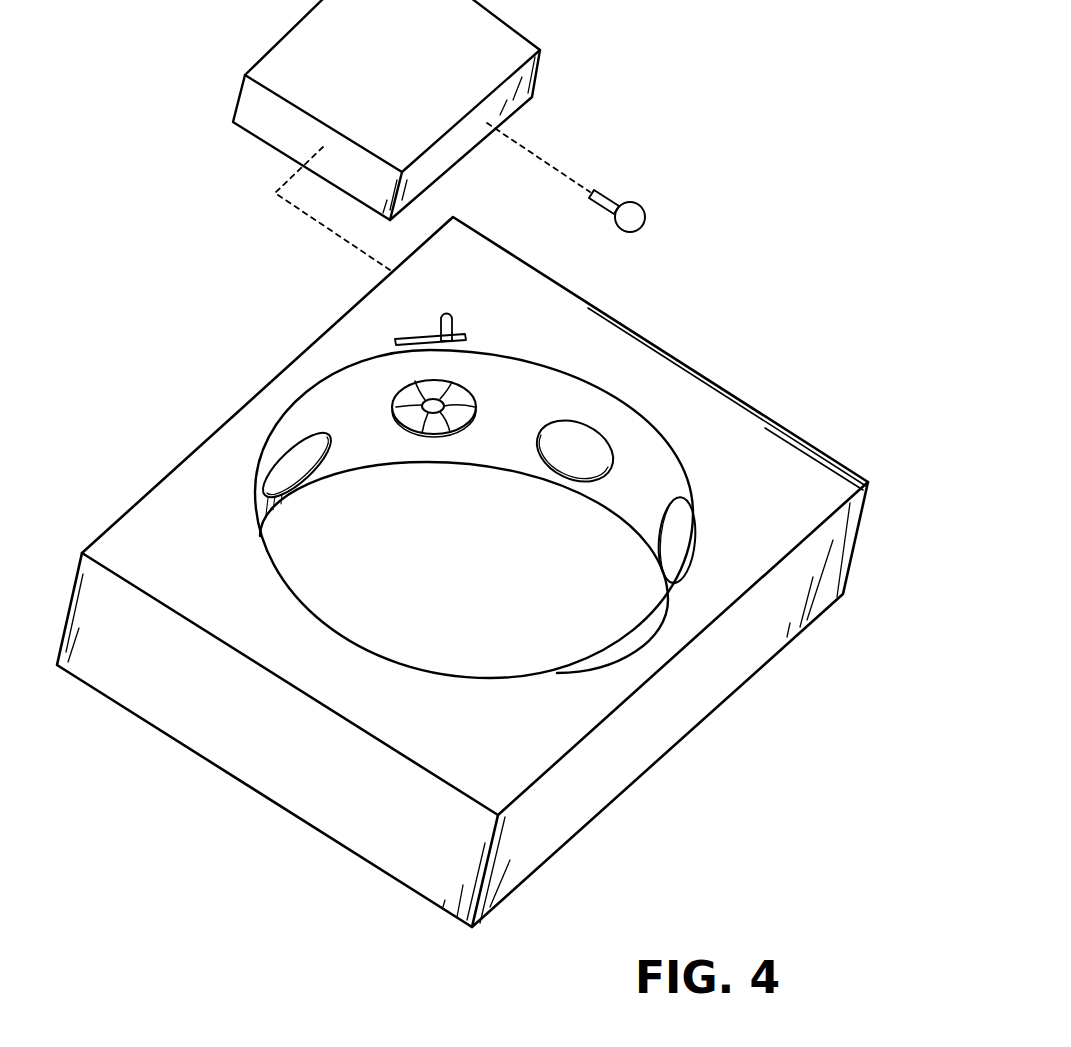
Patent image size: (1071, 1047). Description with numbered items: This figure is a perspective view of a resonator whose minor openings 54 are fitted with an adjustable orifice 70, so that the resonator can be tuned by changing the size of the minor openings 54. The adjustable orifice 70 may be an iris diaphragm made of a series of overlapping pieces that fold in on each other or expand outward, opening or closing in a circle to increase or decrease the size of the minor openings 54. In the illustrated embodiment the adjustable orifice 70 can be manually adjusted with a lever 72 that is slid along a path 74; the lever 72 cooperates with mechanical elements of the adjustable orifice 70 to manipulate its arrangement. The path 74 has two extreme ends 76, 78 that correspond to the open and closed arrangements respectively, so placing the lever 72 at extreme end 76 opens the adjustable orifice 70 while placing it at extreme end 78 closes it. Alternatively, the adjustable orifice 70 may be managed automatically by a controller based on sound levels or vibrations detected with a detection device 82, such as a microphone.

The minor openings 54 is at (292, 443).
The adjustable orifice 70 is at (394, 400).
The lever 72 is at (452, 312).
The path 74 is at (427, 338).
The extreme end 76 is at (393, 392).
The extreme end 78 is at (452, 384).
The detection device 82 is at (540, 50).